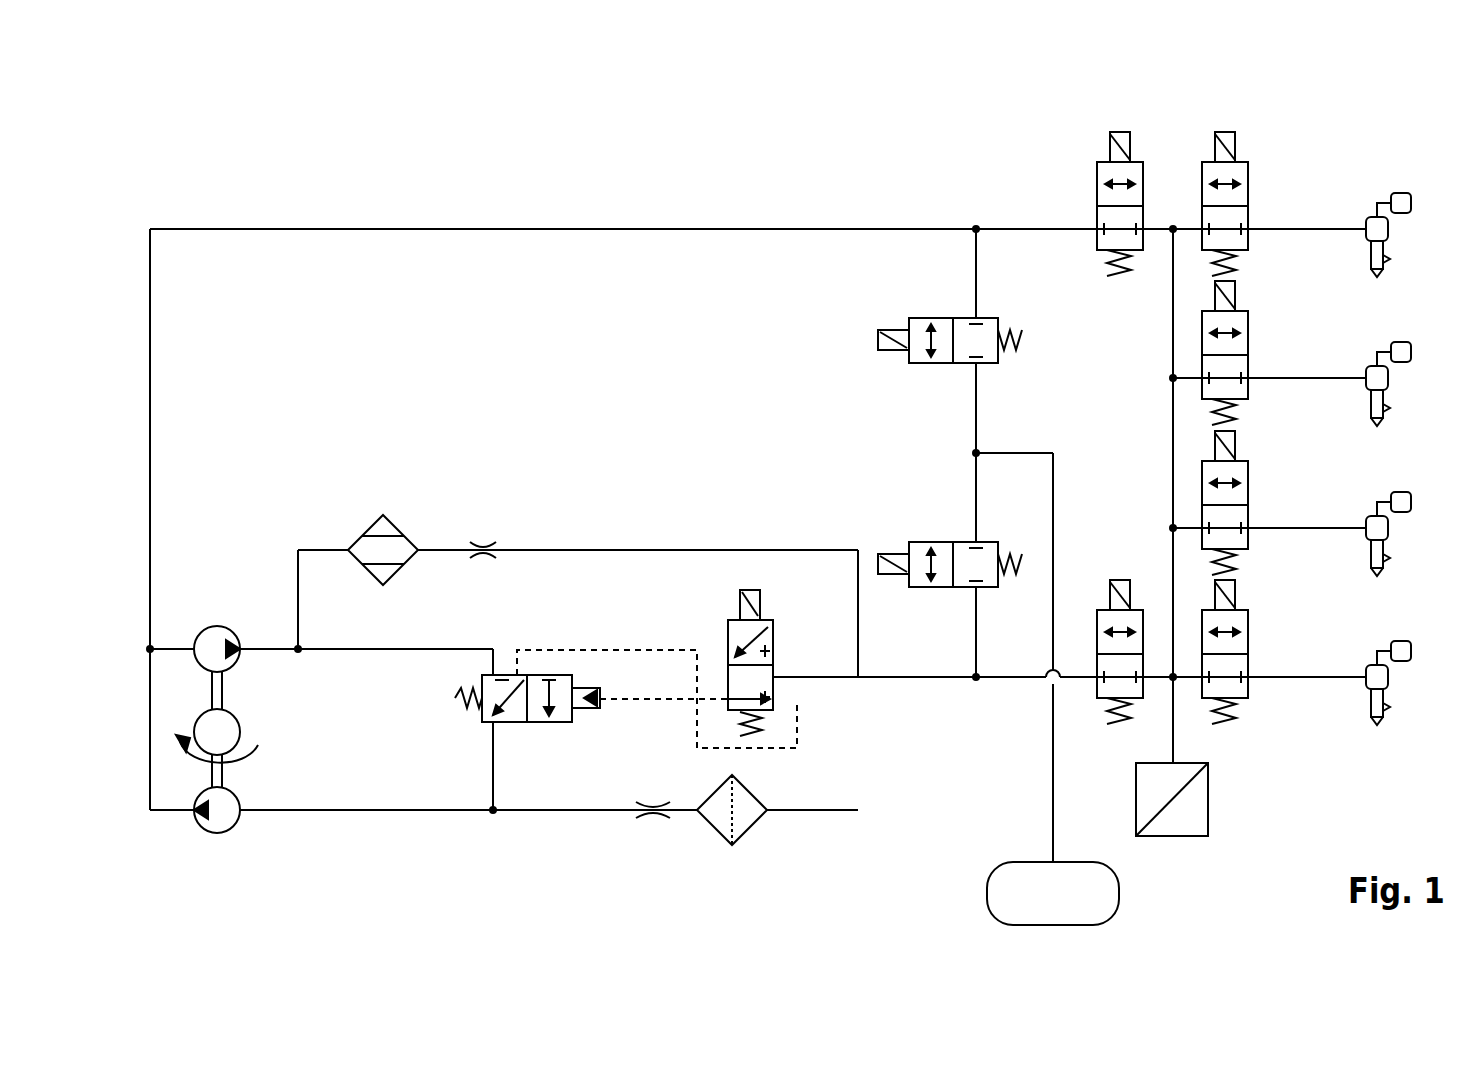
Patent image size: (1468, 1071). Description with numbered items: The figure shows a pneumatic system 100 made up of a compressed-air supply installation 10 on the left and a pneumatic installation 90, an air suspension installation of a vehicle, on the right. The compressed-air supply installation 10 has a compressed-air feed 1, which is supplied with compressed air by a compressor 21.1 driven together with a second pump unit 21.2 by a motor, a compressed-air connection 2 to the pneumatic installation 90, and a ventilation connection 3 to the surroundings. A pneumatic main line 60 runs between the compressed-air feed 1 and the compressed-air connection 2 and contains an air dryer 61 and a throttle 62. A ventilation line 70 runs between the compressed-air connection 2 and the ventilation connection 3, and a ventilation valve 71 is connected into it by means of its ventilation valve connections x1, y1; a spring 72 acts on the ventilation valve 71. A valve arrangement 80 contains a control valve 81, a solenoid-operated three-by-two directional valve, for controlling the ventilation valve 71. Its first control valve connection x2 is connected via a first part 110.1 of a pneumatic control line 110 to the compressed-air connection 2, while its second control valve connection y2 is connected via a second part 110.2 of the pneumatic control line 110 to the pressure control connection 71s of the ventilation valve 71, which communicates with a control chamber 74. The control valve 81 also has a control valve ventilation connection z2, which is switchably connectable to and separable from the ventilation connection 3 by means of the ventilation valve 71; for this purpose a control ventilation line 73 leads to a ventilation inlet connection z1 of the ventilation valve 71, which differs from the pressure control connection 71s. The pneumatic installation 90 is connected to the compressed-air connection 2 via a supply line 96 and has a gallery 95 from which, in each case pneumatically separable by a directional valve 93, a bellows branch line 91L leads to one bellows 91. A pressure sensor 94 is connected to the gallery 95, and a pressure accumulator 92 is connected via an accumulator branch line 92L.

The pneumatic system 100 is at (878, 112).
The compressed-air supply installation 10 is at (498, 192).
The compressed-air feed 1 is at (298, 655).
The compressed-air connection 2 is at (861, 681).
The ventilation connection 3 is at (858, 810).
The compressor 21.1 is at (215, 626).
The motor with second pump 21.2 is at (190, 725).
The pneumatic main line 60 is at (648, 548).
The air dryer 61 is at (388, 518).
The throttle 62 is at (484, 545).
The ventilation line 70 is at (428, 647).
The ventilation valve 71 is at (547, 724).
The pressure control connection 71s is at (586, 712).
The spring 72 is at (455, 698).
The control ventilation line 73 is at (638, 648).
The control chamber 74 is at (590, 647).
The valve arrangement 80 is at (742, 492).
The control valve 81 is at (736, 618).
The pneumatic installation 90 is at (1255, 838).
The bellows 91 is at (1388, 229).
The injector line 91L is at (1342, 228).
The pressure accumulator 92 is at (1120, 893).
The tank line 92L is at (1052, 765).
The directional valve 93 is at (1250, 179).
The pressure sensor 94 is at (1208, 800).
The gallery 95 is at (1172, 355).
The supply line 96 is at (918, 681).
The pneumatic control line 110 is at (820, 684).
The first part of the pneumatic control line 110.1 is at (812, 673).
The second part of the pneumatic control line 110.2 is at (650, 705).
The ventilation valve connection x1 is at (505, 673).
The ventilation valve connection y1 is at (500, 726).
The ventilation inlet connection z1 is at (520, 673).
The first control valve connection x2 is at (775, 668).
The second control valve connection y2 is at (727, 694).
The control valve ventilation connection z2 is at (778, 712).